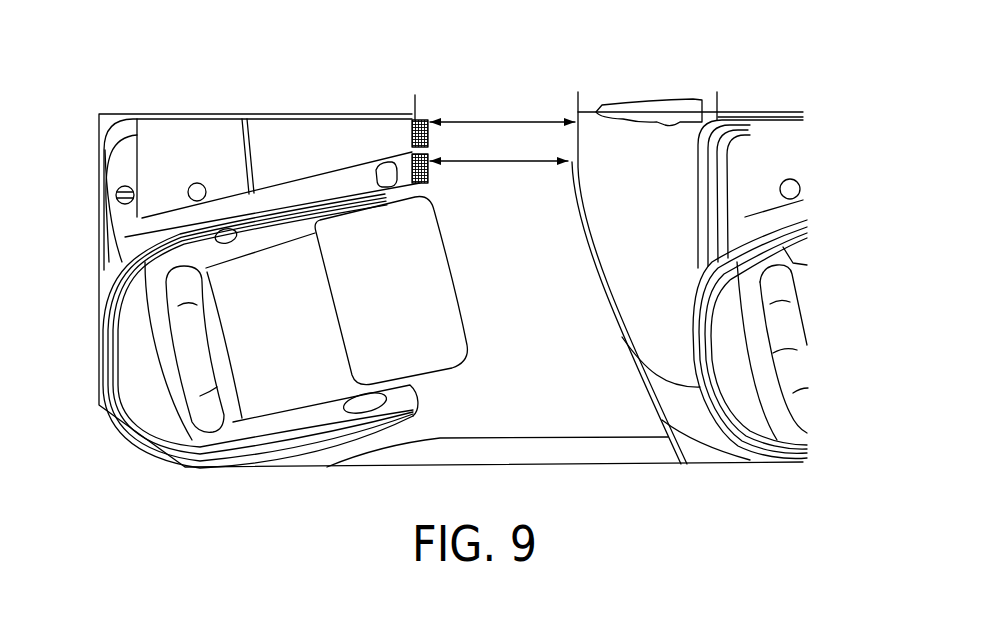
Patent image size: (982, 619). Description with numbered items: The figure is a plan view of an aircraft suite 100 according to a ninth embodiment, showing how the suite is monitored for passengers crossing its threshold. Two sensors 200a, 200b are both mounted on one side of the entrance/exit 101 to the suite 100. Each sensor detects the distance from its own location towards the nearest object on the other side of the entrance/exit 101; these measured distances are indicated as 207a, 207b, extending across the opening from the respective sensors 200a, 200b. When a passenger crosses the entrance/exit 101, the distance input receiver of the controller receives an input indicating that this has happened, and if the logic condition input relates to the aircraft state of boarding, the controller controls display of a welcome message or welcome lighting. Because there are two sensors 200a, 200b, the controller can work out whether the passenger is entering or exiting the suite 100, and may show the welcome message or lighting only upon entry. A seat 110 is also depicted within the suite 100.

The aircraft suite 100 is at (694, 58).
The entrance/exit 101 is at (488, 106).
The vehicle seat 110 is at (302, 339).
The sensor 200a is at (431, 178).
The sensor 200b is at (420, 117).
The distance 207a is at (499, 175).
The distance 207b is at (502, 136).